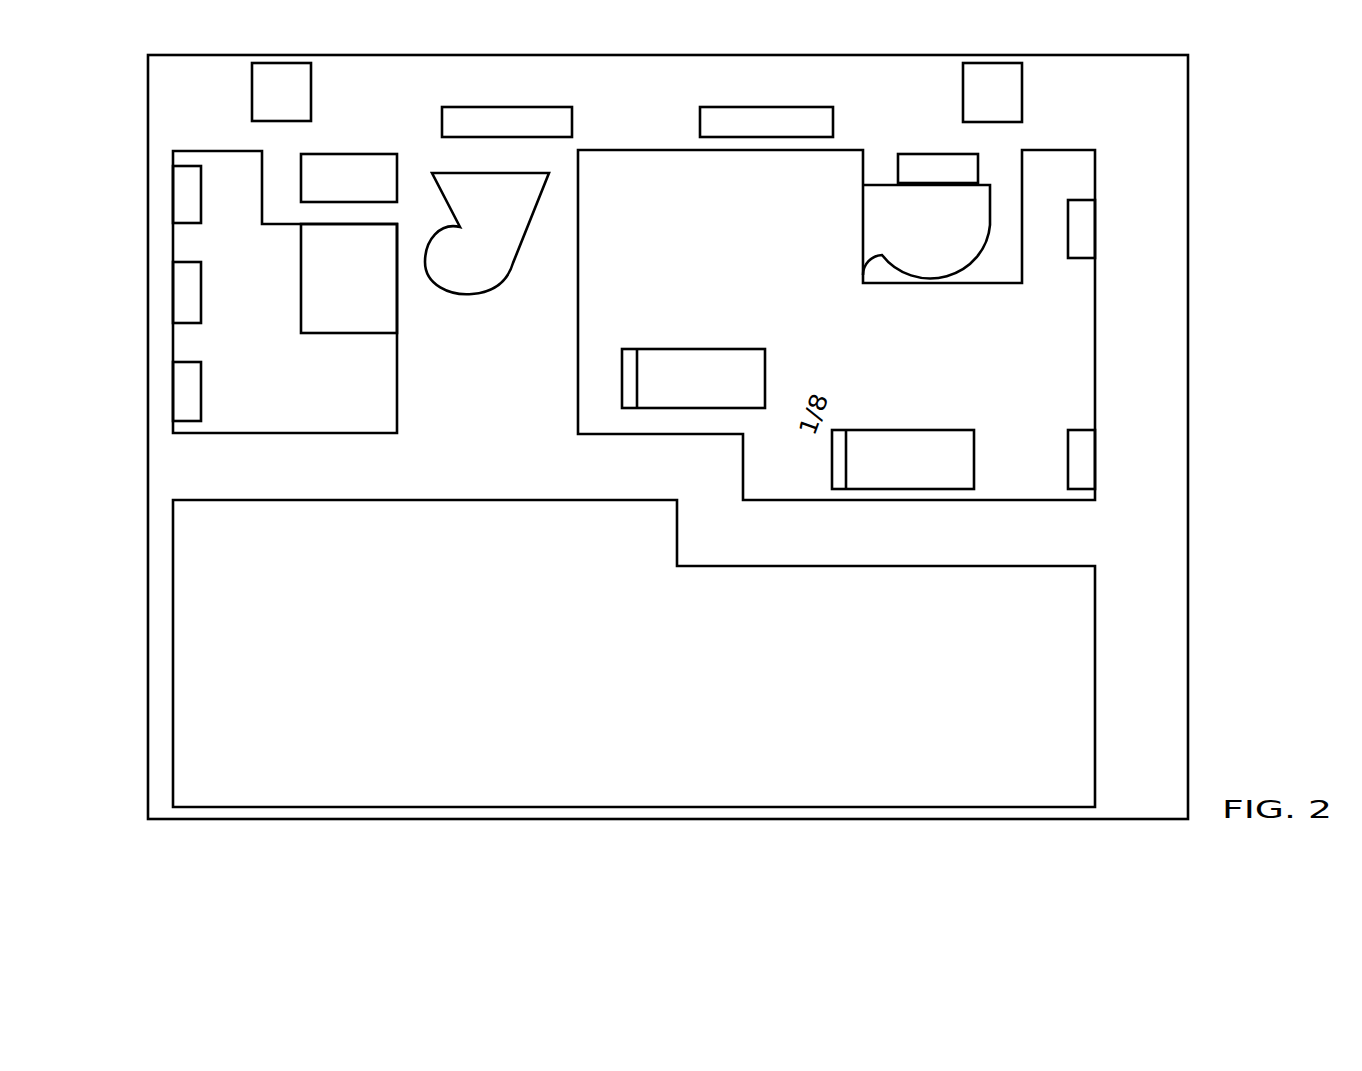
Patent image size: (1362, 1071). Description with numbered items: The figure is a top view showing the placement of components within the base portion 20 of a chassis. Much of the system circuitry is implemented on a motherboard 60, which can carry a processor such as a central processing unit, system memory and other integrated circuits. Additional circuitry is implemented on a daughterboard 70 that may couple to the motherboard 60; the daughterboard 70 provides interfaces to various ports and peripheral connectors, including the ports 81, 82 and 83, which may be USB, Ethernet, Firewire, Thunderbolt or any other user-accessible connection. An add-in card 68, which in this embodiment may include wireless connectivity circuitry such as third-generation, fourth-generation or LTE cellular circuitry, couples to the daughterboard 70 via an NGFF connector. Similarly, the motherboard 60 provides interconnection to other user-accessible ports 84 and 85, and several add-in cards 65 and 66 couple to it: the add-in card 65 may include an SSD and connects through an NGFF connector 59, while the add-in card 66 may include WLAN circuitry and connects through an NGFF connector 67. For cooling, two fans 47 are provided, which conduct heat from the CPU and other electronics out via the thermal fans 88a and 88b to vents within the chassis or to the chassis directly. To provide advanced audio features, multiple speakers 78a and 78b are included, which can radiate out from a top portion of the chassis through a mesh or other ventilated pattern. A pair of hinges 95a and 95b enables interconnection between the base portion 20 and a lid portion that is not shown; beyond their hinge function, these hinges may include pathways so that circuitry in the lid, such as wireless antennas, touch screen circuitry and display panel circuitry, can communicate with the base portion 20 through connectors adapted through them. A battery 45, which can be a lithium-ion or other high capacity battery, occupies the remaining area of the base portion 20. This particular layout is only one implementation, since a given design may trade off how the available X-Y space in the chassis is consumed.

The base portion 20 is at (1207, 140).
The battery 45 is at (599, 718).
The fans 47 is at (510, 257).
The NGFF connector 59 is at (628, 349).
The motherboard 60 is at (741, 286).
The add-in card 65 is at (765, 378).
The add-in card 66 is at (914, 428).
The NGFF connector 67 is at (840, 430).
The add-in card 68 is at (390, 315).
The daughterboard 70 is at (311, 371).
The speaker 78a is at (348, 153).
The speaker 78b is at (898, 165).
The port 81 is at (183, 191).
The port 82 is at (183, 291).
The port 83 is at (183, 389).
The port 84 is at (1085, 233).
The port 85 is at (1086, 452).
The thermal fan 88a is at (507, 107).
The thermal fan 88b is at (766, 107).
The hinge 95a is at (311, 91).
The hinge 95b is at (1022, 92).